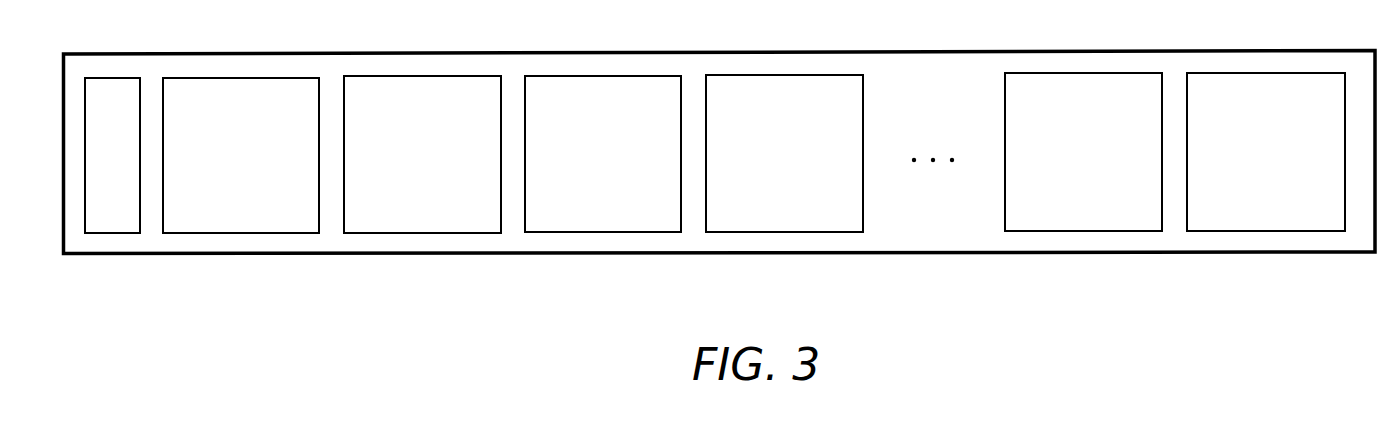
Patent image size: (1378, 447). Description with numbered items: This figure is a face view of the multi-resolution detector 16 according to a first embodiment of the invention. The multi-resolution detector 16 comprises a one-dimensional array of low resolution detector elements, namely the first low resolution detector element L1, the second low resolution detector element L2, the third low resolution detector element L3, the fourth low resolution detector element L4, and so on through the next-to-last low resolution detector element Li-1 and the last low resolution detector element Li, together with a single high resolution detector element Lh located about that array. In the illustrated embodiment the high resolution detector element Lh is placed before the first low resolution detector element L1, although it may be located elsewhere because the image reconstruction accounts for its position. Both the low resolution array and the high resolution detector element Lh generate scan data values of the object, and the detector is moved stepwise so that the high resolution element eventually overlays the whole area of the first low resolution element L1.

The multi-resolution detector 16 is at (720, 196).
The high resolution detector element Lh is at (112, 155).
The first low resolution detector element L1 is at (241, 155).
The second low resolution detector element L2 is at (422, 154).
The third low resolution detector element L3 is at (603, 154).
The fourth low resolution detector element L4 is at (784, 153).
The next-to-last low resolution detector element Li-1 is at (1083, 152).
The last low resolution detector element Li is at (1266, 152).